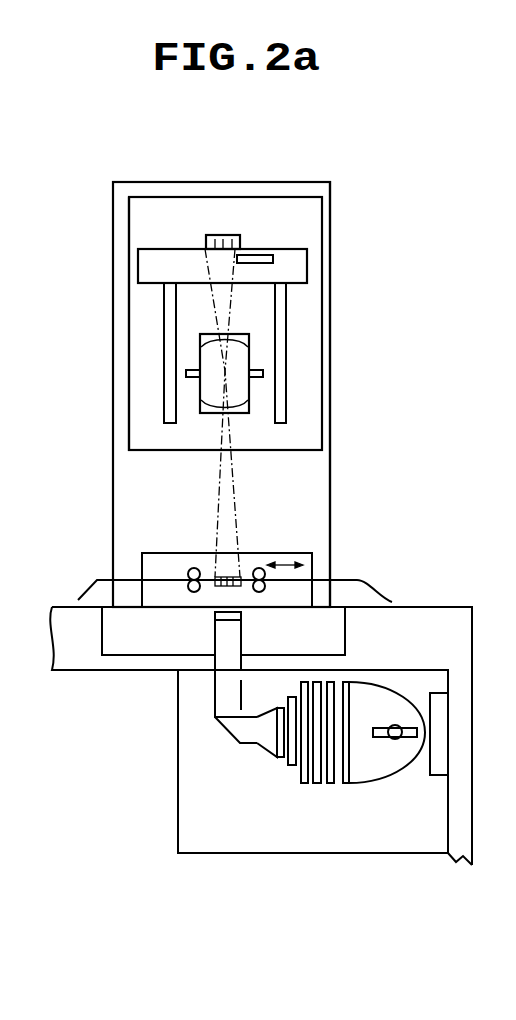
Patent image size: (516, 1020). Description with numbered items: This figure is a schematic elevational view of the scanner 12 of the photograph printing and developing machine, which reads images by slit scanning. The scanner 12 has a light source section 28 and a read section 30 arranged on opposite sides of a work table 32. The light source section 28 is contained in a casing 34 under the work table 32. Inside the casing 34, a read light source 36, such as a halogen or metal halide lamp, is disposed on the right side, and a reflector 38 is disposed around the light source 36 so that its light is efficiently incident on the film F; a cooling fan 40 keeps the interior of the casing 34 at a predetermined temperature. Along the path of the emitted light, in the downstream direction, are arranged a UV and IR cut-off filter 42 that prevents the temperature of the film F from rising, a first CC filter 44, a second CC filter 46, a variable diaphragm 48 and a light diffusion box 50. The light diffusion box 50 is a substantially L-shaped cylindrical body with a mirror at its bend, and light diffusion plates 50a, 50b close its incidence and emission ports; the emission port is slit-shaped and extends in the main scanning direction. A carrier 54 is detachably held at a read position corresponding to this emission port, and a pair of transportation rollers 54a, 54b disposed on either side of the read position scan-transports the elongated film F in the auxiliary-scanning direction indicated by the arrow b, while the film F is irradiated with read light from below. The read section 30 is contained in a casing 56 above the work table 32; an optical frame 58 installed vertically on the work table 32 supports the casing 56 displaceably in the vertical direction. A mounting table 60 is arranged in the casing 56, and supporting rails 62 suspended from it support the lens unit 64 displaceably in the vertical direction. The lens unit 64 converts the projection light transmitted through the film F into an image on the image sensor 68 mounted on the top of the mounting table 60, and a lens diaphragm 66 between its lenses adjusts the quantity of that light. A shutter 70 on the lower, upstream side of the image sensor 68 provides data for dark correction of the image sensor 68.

The scanner 12 is at (370, 162).
The light source section 28 is at (201, 808).
The read section 30 is at (142, 422).
The work table 32 is at (444, 607).
The casing 34 is at (190, 855).
The read light source 36 is at (400, 740).
The reflector 38 is at (372, 782).
The cooling fan 40 is at (447, 771).
The UV and IR cut-off filter 42 is at (330, 783).
The first CC filter 44 is at (316, 783).
The second CC filter 46 is at (305, 783).
The variable diaphragm 48 is at (291, 768).
The light diffusion box 50 is at (232, 737).
The light diffusion plate 50a is at (283, 758).
The light diffusion plate 50b is at (215, 618).
The carrier 54 is at (314, 553).
The transportation roller 54a is at (192, 568).
The transportation roller 54b is at (258, 592).
The casing 56 is at (322, 347).
The optical frame 58 is at (330, 408).
The mounting table 60 is at (138, 263).
The supporting rails 62 is at (164, 300).
The lens unit 64 is at (249, 406).
The lens diaphragm 66 is at (186, 373).
The image sensor 68 is at (228, 235).
The shutter 70 is at (307, 255).
The film F is at (78, 600).
The arrow b is at (283, 564).